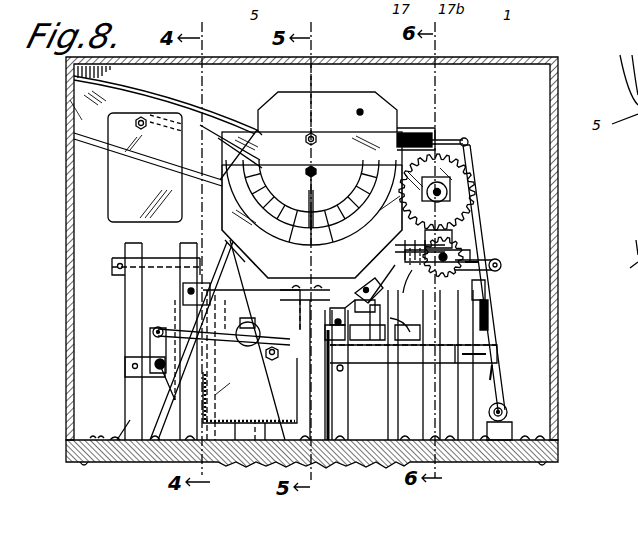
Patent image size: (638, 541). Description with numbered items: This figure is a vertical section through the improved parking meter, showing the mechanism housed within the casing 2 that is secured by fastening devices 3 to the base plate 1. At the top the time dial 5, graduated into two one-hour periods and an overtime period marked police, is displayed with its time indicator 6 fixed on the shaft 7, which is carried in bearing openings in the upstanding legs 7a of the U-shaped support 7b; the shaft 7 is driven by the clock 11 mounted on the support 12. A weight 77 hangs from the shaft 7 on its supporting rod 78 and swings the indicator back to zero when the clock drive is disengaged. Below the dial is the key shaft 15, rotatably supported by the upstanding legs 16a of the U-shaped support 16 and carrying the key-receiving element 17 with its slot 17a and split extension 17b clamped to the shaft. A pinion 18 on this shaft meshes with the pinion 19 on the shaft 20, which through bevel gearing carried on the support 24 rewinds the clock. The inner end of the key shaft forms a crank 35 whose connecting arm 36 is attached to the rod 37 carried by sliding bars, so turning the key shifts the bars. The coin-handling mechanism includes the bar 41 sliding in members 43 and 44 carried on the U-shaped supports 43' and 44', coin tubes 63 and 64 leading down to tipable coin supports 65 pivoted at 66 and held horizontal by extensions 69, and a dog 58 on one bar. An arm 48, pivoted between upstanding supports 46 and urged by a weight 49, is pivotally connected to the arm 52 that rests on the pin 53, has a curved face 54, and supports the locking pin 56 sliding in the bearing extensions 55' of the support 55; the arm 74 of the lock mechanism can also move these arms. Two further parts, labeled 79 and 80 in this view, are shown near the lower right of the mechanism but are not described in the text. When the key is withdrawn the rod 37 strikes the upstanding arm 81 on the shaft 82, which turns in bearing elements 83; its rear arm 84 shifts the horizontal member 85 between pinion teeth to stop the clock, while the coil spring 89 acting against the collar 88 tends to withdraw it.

The base plate 1 is at (500, 462).
The casing 2 is at (557, 190).
The fastening devices 3 is at (545, 466).
The time dial 5 is at (262, 188).
The time indicator 6 is at (334, 160).
The shaft 7 is at (305, 158).
The upstanding legs 7a is at (300, 395).
The U-shaped support 7b is at (273, 468).
The clock 11 is at (336, 90).
The support 12 is at (122, 432).
The shaft 15 is at (470, 250).
The U-shaped support 16 is at (240, 462).
The upstanding legs 16a is at (415, 415).
The key-receiving element 17 is at (408, 289).
The slot 17a is at (400, 262).
The split extension 17b is at (475, 270).
The pinion 18 is at (455, 232).
The pinion 19 is at (462, 187).
The shaft 20 is at (445, 185).
The support 24 is at (471, 475).
The crank 35 is at (408, 242).
The connecting arm 36 is at (500, 264).
The rod 37 is at (498, 267).
The bar 41 is at (110, 278).
The member 43 is at (176, 335).
The U-shaped support 43' is at (230, 388).
The member 44 is at (113, 337).
The U-shaped support 44' is at (125, 376).
The upstanding supports 46 is at (236, 240).
The arm 48 is at (210, 143).
The weight 49 is at (120, 172).
The arm 52 is at (470, 352).
The pin 53 is at (348, 372).
The curved face 54 is at (345, 368).
The support 55 is at (372, 459).
The bearing extensions 55' is at (367, 324).
The locking pin 56 is at (408, 331).
The dog 58 is at (330, 268).
The coin tube 63 is at (85, 118).
The coin tube 64 is at (112, 80).
The coin support 65 is at (264, 362).
The pivot 66 is at (336, 334).
The extension 69 is at (352, 312).
The arm 74 is at (152, 346).
The weight 77 is at (304, 205).
The supporting rod 78 is at (322, 205).
The rod 79 is at (425, 330).
The block 80 is at (472, 305).
The upstanding arm 81 is at (498, 375).
The shaft 82 is at (507, 412).
The bearing elements 83 is at (507, 423).
The upstanding arm 84 is at (480, 246).
The horizontal member 85 is at (445, 142).
The collar 88 is at (432, 138).
The coil spring 89 is at (420, 133).